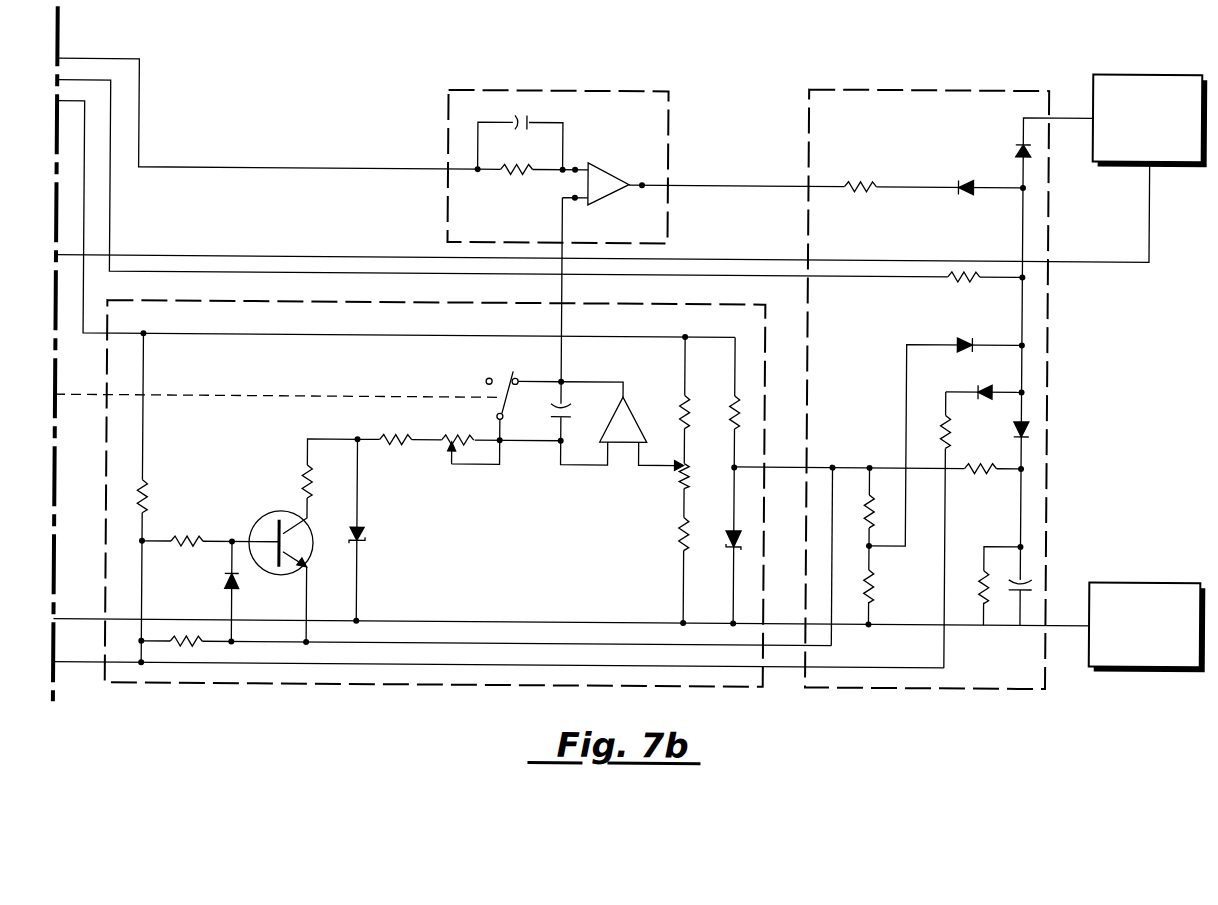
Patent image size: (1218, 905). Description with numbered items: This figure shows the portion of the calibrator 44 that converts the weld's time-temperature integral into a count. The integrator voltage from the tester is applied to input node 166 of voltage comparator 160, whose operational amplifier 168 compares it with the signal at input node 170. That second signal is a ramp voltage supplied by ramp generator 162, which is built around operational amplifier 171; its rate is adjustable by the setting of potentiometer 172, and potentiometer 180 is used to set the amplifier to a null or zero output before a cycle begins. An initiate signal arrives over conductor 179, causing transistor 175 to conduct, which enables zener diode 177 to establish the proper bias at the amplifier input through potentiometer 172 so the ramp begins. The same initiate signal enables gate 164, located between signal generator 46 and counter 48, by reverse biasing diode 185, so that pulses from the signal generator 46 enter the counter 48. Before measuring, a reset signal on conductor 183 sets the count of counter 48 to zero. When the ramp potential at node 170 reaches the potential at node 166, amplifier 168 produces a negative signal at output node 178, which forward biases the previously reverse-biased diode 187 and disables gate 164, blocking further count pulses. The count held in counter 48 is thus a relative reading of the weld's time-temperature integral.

The calibrator 44 is at (410, 752).
The signal generator 46 is at (1129, 579).
The counter 48 is at (1130, 71).
The voltage comparator 160 is at (558, 215).
The ramp generator 162 is at (435, 460).
The gate 164 is at (913, 364).
The input node 166 is at (574, 168).
The operational amplifier 168 is at (607, 173).
The input node 170 is at (572, 198).
The operational amplifier 171 is at (631, 411).
The potentiometer 172 is at (455, 468).
The transistor 175 is at (273, 516).
The zener diode 177 is at (365, 541).
The output node 178 is at (640, 187).
The conductor 179 is at (778, 666).
The potentiometer 180 is at (660, 469).
The conductor 183 is at (1104, 260).
The diode 185 is at (977, 394).
The diode 187 is at (959, 193).